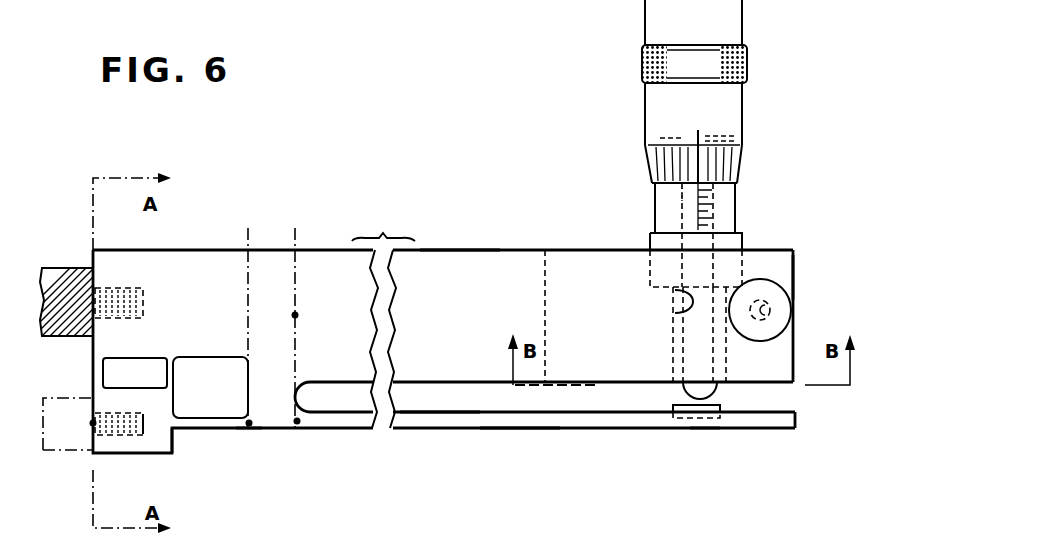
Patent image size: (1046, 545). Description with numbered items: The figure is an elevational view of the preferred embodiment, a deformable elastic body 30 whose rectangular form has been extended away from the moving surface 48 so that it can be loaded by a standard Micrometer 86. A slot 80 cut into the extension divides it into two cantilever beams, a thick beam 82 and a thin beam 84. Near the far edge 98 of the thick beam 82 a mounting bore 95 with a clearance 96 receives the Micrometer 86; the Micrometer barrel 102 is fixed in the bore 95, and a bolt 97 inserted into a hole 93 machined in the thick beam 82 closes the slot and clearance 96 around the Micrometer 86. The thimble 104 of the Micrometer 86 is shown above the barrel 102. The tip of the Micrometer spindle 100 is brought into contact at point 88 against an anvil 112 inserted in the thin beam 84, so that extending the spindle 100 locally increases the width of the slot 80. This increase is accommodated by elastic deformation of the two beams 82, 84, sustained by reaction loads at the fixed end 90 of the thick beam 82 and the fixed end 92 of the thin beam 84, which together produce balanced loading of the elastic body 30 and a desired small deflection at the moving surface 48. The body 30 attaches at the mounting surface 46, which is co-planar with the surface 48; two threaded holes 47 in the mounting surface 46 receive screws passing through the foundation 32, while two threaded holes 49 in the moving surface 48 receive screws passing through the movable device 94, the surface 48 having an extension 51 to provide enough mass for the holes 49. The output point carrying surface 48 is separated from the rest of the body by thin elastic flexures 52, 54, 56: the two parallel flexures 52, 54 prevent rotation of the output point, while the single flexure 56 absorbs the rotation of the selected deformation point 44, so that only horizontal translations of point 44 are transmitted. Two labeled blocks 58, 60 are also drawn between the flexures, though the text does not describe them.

The elastic body 30 is at (265, 265).
The foundation 32 is at (61, 270).
The deformation point 44 is at (249, 421).
The mounting surface 46 is at (95, 273).
The threaded holes 47 is at (120, 318).
The moving surface 48 is at (93, 447).
The threaded holes 49 is at (145, 425).
The extension 51 is at (168, 448).
The elastic flexure 52 is at (103, 373).
The elastic flexure 54 is at (196, 357).
The elastic flexure 56 is at (249, 426).
The component 58 is at (135, 373).
The component 60 is at (210, 387).
The slot 80 is at (432, 400).
The thick beam 82 is at (448, 262).
The thin beam 84 is at (523, 423).
The Micrometer 86 is at (668, 191).
The contact point 88 is at (702, 418).
The fixed end of thick beam 90 is at (296, 316).
The fixed end of thin beam 92 is at (298, 424).
The hole 93 is at (770, 310).
The movable device 94 is at (44, 452).
The mounting bore 95 is at (547, 267).
The clearance 96 is at (675, 305).
The bolt 97 is at (757, 280).
The far edge 98 is at (793, 268).
The Micrometer spindle 100 is at (714, 389).
The Micrometer barrel 102 is at (742, 190).
The micrometer thimble 104 is at (743, 98).
The anvil 112 is at (673, 406).